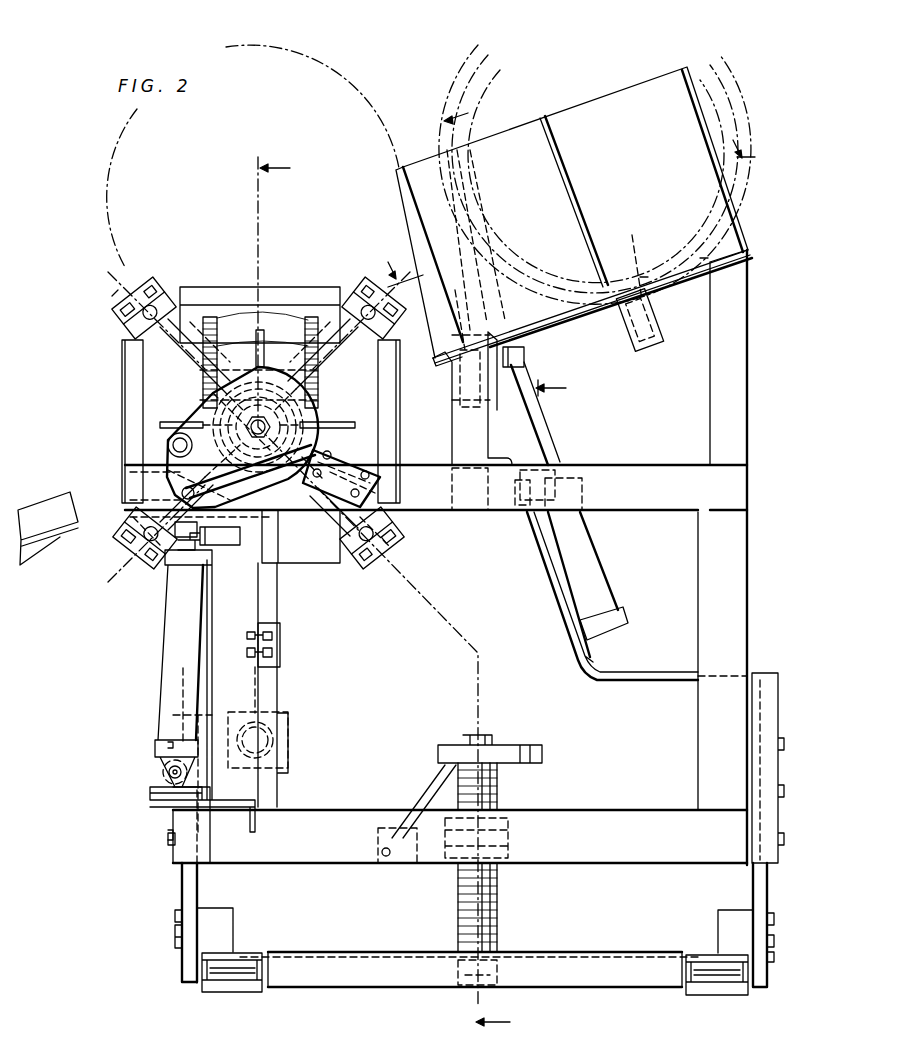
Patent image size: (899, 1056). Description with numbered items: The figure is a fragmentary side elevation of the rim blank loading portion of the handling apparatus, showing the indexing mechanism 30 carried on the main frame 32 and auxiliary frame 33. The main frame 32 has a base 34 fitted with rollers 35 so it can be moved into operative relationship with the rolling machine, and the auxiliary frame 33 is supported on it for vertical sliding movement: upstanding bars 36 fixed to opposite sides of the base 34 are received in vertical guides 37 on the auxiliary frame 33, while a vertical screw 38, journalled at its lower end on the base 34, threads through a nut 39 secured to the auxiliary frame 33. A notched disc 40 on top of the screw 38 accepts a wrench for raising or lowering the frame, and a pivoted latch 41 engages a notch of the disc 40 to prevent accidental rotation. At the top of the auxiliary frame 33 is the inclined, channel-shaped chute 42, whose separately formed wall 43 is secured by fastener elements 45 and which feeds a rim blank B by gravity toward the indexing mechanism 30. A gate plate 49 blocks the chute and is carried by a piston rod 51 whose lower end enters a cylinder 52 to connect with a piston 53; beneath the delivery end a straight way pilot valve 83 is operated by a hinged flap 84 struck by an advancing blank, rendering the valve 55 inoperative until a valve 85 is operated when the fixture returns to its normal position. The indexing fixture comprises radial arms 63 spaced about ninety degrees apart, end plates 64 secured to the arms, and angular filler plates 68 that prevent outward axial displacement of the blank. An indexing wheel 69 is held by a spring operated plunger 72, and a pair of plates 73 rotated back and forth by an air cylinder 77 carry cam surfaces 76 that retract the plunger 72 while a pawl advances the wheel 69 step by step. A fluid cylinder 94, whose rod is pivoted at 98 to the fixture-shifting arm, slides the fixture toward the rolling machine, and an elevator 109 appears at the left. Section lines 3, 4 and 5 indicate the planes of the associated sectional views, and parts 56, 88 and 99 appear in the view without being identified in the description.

The indexing mechanism 30 is at (118, 323).
The main frame 32 is at (582, 948).
The auxiliary frame 33 is at (703, 722).
The base 34 is at (645, 960).
The rollers 35 is at (240, 980).
The upstanding bars 36 is at (195, 908).
The vertical guides 37 is at (178, 848).
The vertical screw 38 is at (495, 932).
The nut 39 is at (510, 830).
The disc 40 is at (505, 748).
The latch 41 is at (402, 800).
The chute 42 is at (748, 240).
The wall 43 is at (608, 100).
The fastener elements 45 is at (700, 260).
The plate 49 is at (530, 352).
The piston rod 51 is at (548, 452).
The cylinder 52 is at (592, 568).
The piston 53 is at (582, 500).
The valve 55 is at (642, 348).
The pivot pin 56 is at (631, 257).
The arms 63 is at (258, 427).
The end plates 64 is at (160, 297).
The angular filler plates 68 is at (292, 300).
The indexing wheel 69 is at (247, 380).
The spring operated plunger 72 is at (328, 456).
The plates 73 is at (172, 468).
The cam surfaces 76 is at (315, 425).
The air cylinder 77 is at (175, 625).
The straight way pilot valve 83 is at (492, 405).
The flap 84 is at (470, 348).
The valve 85 is at (278, 655).
The rack 88 is at (304, 335).
The fluid cylinder 94 is at (285, 773).
The pivot 98 is at (282, 640).
The cylinder 99 is at (222, 545).
The elevator 109 is at (75, 530).
The section line 3 is at (505, 243).
The section line 4 is at (567, 208).
The section line 5 is at (392, 590).
The rim blank B is at (384, 128).